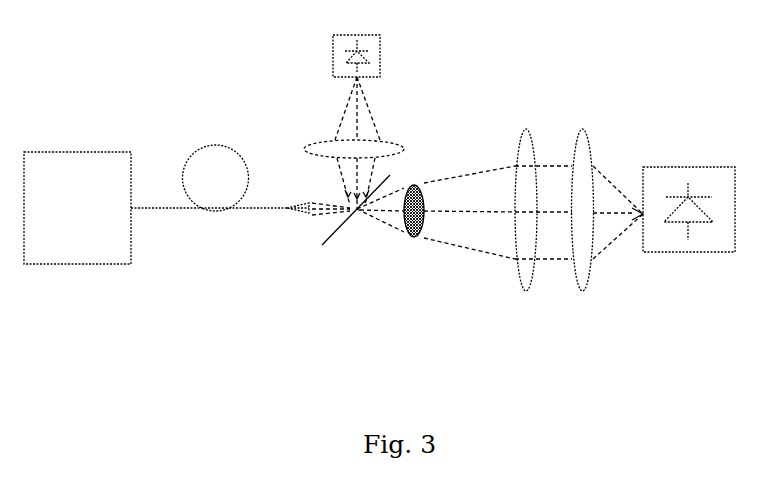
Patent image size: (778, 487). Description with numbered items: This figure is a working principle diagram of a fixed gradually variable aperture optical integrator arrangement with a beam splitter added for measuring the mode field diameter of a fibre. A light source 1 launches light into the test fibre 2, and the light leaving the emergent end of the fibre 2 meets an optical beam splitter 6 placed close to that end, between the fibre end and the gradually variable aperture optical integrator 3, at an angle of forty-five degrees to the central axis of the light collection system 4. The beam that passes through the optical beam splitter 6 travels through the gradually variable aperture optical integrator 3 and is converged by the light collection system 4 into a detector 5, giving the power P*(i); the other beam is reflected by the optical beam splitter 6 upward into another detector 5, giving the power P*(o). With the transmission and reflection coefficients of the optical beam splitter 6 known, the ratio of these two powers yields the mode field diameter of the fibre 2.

The light source 1 is at (83, 243).
The test fibre 2 is at (212, 162).
The gradually variable aperture optical integrator 3 is at (427, 183).
The light collection system 4 is at (532, 281).
The detector 5 is at (705, 235).
The optical beam splitter 6 is at (358, 212).